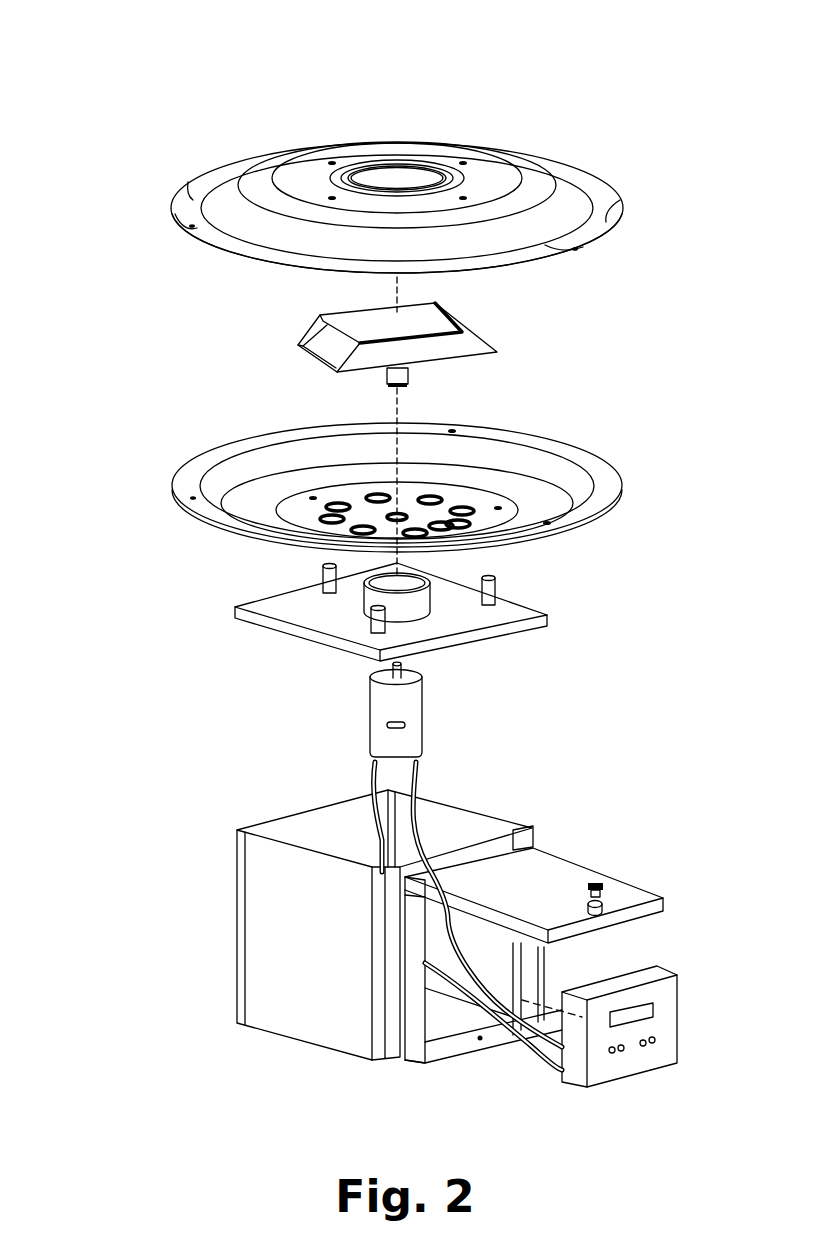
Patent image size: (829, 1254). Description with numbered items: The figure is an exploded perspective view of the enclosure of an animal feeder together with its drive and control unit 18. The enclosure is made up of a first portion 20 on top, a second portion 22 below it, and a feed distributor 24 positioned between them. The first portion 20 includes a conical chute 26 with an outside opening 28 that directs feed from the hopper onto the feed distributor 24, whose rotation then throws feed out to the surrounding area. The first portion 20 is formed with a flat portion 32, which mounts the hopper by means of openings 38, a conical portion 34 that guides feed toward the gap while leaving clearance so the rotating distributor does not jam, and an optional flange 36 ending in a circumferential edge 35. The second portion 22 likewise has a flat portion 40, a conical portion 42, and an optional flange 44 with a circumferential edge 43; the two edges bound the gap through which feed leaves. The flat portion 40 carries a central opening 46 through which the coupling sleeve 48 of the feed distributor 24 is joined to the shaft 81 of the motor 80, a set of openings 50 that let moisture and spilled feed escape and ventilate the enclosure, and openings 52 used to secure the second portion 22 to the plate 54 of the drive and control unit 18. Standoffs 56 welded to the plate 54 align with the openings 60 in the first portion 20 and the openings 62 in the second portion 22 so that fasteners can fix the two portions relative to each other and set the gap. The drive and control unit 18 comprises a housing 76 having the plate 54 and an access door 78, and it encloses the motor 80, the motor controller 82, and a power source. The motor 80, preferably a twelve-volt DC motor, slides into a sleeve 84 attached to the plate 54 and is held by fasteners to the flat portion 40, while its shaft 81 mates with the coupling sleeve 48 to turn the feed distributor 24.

The drive and control unit 18 is at (414, 942).
The first portion 20 is at (361, 157).
The second portion 22 is at (390, 472).
The feed distributor 24 is at (482, 350).
The conical chute 26 is at (410, 180).
The outside opening 28 is at (367, 180).
The flat portion 32 is at (296, 173).
The conical portion 34 is at (567, 168).
The circumferential edge 35 is at (233, 172).
The flange 36 is at (190, 198).
The openings 38 is at (462, 162).
The flat portion 40 is at (457, 495).
The conical portion 42 is at (283, 463).
The circumferential edge 43 is at (185, 498).
The flange 44 is at (607, 505).
The opening 46 is at (307, 523).
The coupling sleeve 48 is at (398, 378).
The openings 50 is at (340, 503).
The openings 52 is at (498, 507).
The plate 54 is at (432, 629).
The standoffs 56 is at (318, 575).
The openings 60 is at (193, 227).
The openings 62 is at (452, 432).
The housing 76 is at (265, 937).
The access door 78 is at (548, 878).
The motor 80 is at (385, 723).
The shaft 81 is at (367, 673).
The motor controller 82 is at (660, 1025).
The sleeve 84 is at (412, 600).